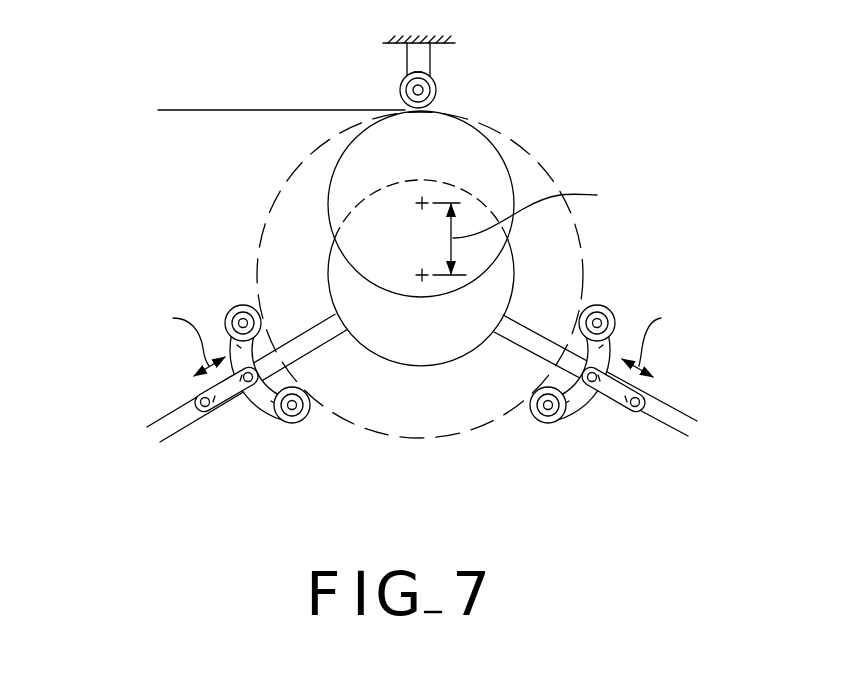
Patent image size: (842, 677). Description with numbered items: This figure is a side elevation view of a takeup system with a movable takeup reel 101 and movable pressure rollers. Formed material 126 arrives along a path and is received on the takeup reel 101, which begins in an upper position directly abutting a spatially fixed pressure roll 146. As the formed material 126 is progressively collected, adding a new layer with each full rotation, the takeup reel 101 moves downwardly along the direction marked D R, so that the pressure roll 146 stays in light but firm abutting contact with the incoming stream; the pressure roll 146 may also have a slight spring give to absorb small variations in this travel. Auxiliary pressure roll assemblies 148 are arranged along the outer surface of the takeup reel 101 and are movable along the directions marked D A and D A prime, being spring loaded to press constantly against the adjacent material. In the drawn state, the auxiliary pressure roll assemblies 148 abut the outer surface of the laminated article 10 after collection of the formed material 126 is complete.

The laminated article 10 is at (586, 266).
The takeup reel 101 is at (502, 155).
The formed material 126 is at (227, 110).
The pressure roll 146 is at (437, 92).
The auxiliary pressure roll assemblies 148 is at (245, 406).